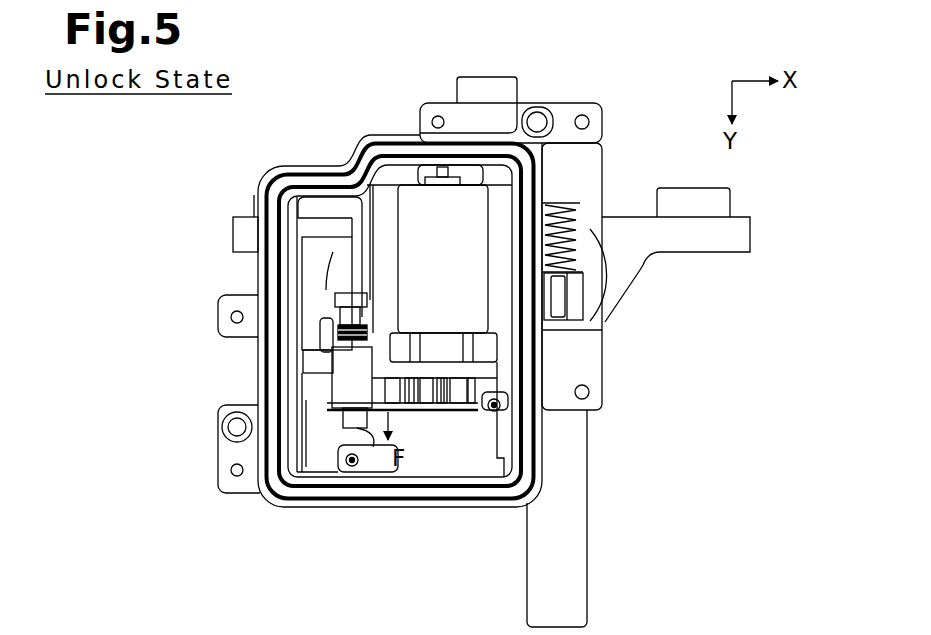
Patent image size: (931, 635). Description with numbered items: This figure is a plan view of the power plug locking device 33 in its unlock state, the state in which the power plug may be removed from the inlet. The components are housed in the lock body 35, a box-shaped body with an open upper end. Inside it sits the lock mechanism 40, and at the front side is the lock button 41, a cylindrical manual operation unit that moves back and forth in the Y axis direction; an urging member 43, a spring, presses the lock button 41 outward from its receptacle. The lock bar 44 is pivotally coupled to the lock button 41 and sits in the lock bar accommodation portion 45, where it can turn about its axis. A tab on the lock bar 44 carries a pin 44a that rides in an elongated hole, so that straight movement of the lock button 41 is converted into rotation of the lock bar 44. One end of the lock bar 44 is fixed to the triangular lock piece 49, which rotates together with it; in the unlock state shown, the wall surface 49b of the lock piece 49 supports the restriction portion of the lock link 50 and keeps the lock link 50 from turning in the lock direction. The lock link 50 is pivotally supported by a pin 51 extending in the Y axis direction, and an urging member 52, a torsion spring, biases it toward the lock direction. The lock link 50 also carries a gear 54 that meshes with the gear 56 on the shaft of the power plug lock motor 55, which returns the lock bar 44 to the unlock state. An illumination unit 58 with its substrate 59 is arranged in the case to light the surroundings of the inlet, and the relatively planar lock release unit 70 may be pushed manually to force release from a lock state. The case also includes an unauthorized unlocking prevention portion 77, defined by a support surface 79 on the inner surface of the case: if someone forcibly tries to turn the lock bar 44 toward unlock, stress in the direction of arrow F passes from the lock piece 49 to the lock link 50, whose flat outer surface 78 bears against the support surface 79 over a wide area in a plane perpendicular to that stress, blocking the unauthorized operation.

The power plug locking device 33 is at (276, 106).
The lock body 35 is at (563, 103).
The lock mechanism 40 is at (325, 447).
The lock button 41 is at (585, 583).
The urging member 43 is at (583, 215).
The lock bar 44 is at (593, 285).
The pin 44a is at (602, 322).
The lock bar accommodation portion 45 is at (588, 246).
The lock piece 49 is at (313, 263).
The wall surface 49b is at (328, 293).
The lock link 50 is at (327, 377).
The pin 51 is at (343, 418).
The urging member 52 is at (368, 328).
The gear 54 is at (402, 380).
The power plug lock motor 55 is at (412, 193).
The gear 56 is at (455, 383).
The illumination unit 58 is at (415, 458).
The substrate 59 is at (467, 462).
The lock release unit 70 is at (300, 385).
The unauthorized unlocking prevention portion 77 is at (440, 420).
The outer surface 78 is at (362, 408).
The support surface 79 is at (422, 397).